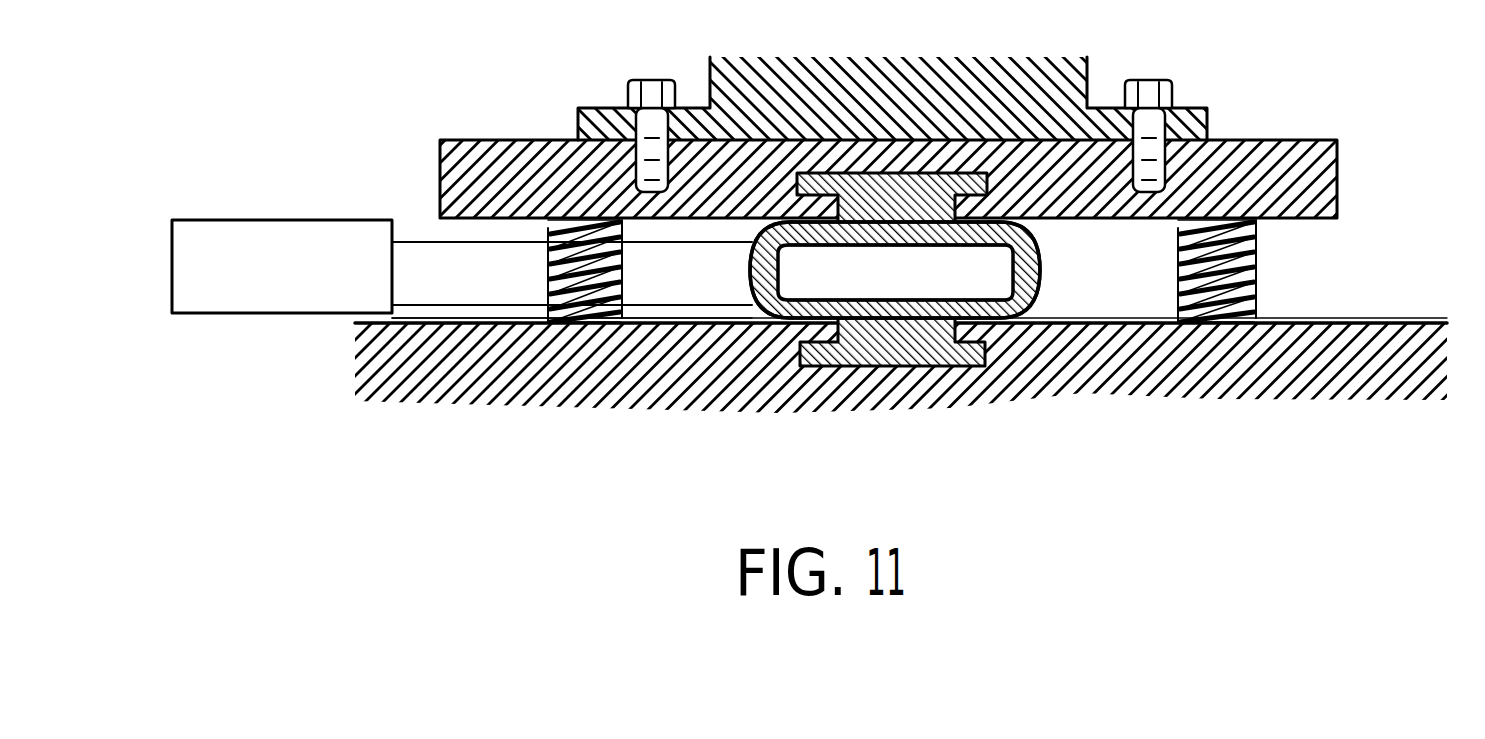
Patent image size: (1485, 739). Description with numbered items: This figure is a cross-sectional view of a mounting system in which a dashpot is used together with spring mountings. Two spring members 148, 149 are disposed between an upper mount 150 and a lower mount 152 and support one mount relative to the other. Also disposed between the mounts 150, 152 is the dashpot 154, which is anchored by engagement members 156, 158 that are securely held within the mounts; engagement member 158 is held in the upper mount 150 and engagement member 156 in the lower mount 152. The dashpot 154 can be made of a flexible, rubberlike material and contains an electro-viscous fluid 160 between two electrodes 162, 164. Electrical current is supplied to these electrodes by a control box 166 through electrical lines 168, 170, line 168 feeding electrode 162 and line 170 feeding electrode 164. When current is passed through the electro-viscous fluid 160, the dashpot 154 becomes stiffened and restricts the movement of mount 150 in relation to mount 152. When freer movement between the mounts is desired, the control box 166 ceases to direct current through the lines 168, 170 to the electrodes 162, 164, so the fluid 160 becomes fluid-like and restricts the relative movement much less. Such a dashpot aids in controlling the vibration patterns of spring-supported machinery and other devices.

The spring member 148 is at (625, 250).
The spring member 149 is at (1255, 245).
The mount 150 is at (1230, 170).
The mount 152 is at (1265, 373).
The dashpot 154 is at (1040, 243).
The engagement member 156 is at (955, 365).
The engagement member 158 is at (913, 172).
The electro-viscous fluid 160 is at (1038, 274).
The electrode 162 is at (907, 246).
The electrode 164 is at (857, 296).
The control box 166 is at (222, 230).
The electrical line 168 is at (458, 240).
The electrical line 170 is at (505, 310).